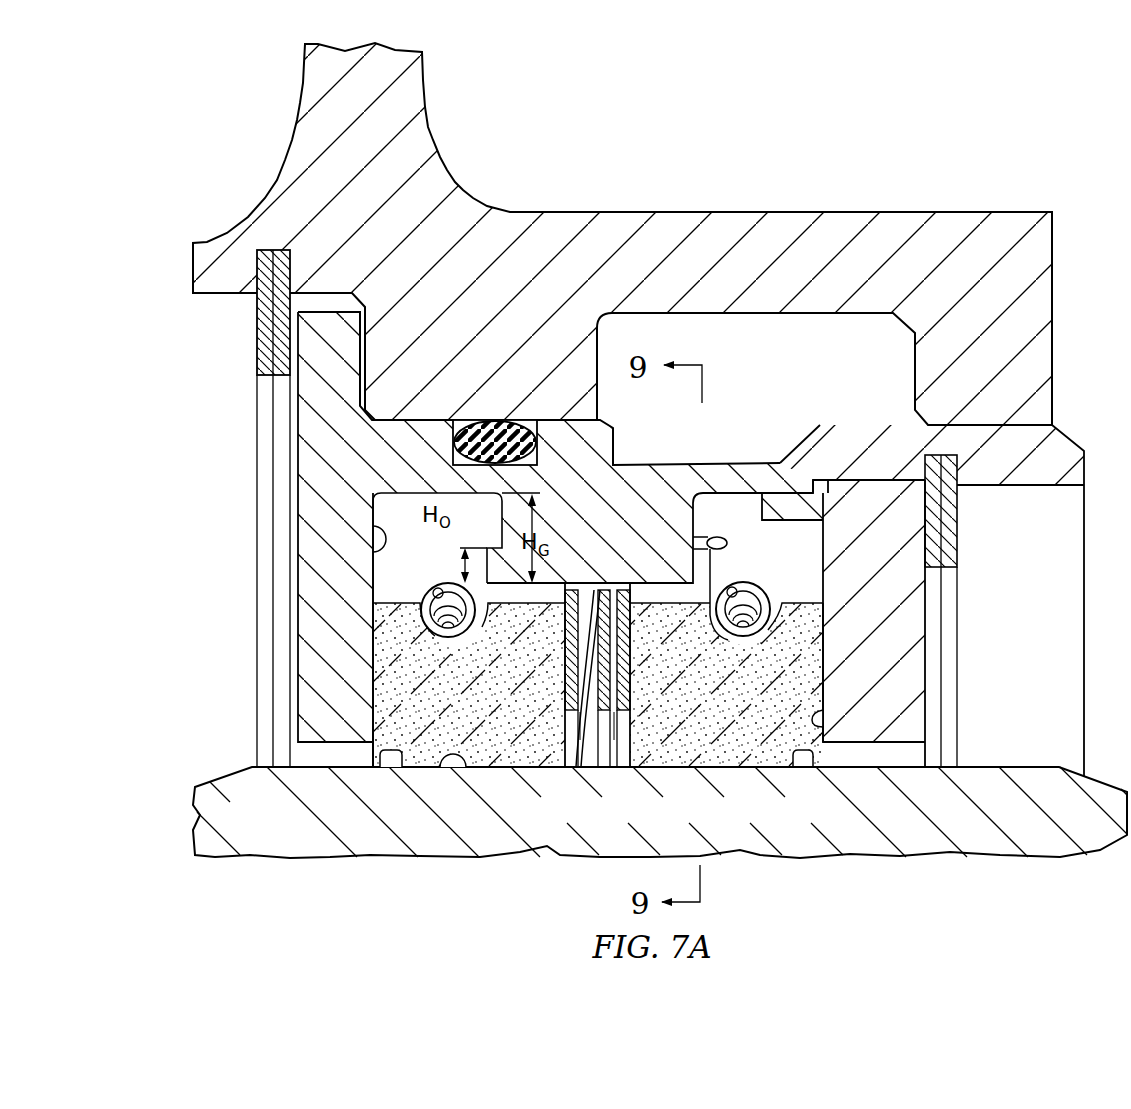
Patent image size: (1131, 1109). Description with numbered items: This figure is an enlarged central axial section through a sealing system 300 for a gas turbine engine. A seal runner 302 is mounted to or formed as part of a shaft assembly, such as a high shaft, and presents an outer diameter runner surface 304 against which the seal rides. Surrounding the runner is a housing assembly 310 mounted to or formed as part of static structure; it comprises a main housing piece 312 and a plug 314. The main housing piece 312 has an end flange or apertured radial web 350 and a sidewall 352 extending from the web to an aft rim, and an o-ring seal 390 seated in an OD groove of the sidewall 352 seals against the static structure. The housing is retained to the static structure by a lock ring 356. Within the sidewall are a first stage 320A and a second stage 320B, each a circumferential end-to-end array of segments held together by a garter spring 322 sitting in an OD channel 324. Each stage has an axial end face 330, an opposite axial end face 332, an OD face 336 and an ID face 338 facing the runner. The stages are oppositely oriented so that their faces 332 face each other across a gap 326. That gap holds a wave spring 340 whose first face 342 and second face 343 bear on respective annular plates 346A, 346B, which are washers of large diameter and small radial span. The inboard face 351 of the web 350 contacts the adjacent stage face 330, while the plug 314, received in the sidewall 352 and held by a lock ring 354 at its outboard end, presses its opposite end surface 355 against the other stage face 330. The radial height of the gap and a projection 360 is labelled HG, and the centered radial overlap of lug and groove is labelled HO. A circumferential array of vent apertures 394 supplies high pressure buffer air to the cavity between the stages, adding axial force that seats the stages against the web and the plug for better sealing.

The sealing system 300 is at (1076, 408).
The seal runner 302 is at (777, 822).
The outer diameter runner surface 304 is at (456, 768).
The housing assembly 310 is at (264, 471).
The main housing piece 312 is at (306, 428).
The plug 314 is at (884, 603).
The first stage 320A is at (708, 737).
The second stage 320B is at (392, 748).
The garter spring 322 is at (422, 600).
The OD channel 324 is at (432, 600).
The gap 326 is at (589, 580).
The axial end face 330 is at (373, 672).
The axial end face 332 is at (608, 740).
The OD face 336 is at (793, 602).
The ID face 338 is at (757, 767).
The wave spring 340 is at (563, 767).
The first face 342 is at (630, 655).
The second face 343 is at (573, 645).
The annular plate 346A is at (632, 683).
The annular plate 346B is at (573, 700).
The web 350 is at (318, 525).
The inboard face 351 is at (380, 545).
The sidewall 352 is at (406, 422).
The lock ring 354 is at (949, 508).
The end surface 355 is at (850, 742).
The lock ring 356 is at (266, 324).
The projection 360 is at (598, 483).
The o-ring seal 390 is at (493, 423).
The vent aperture 394 is at (710, 533).